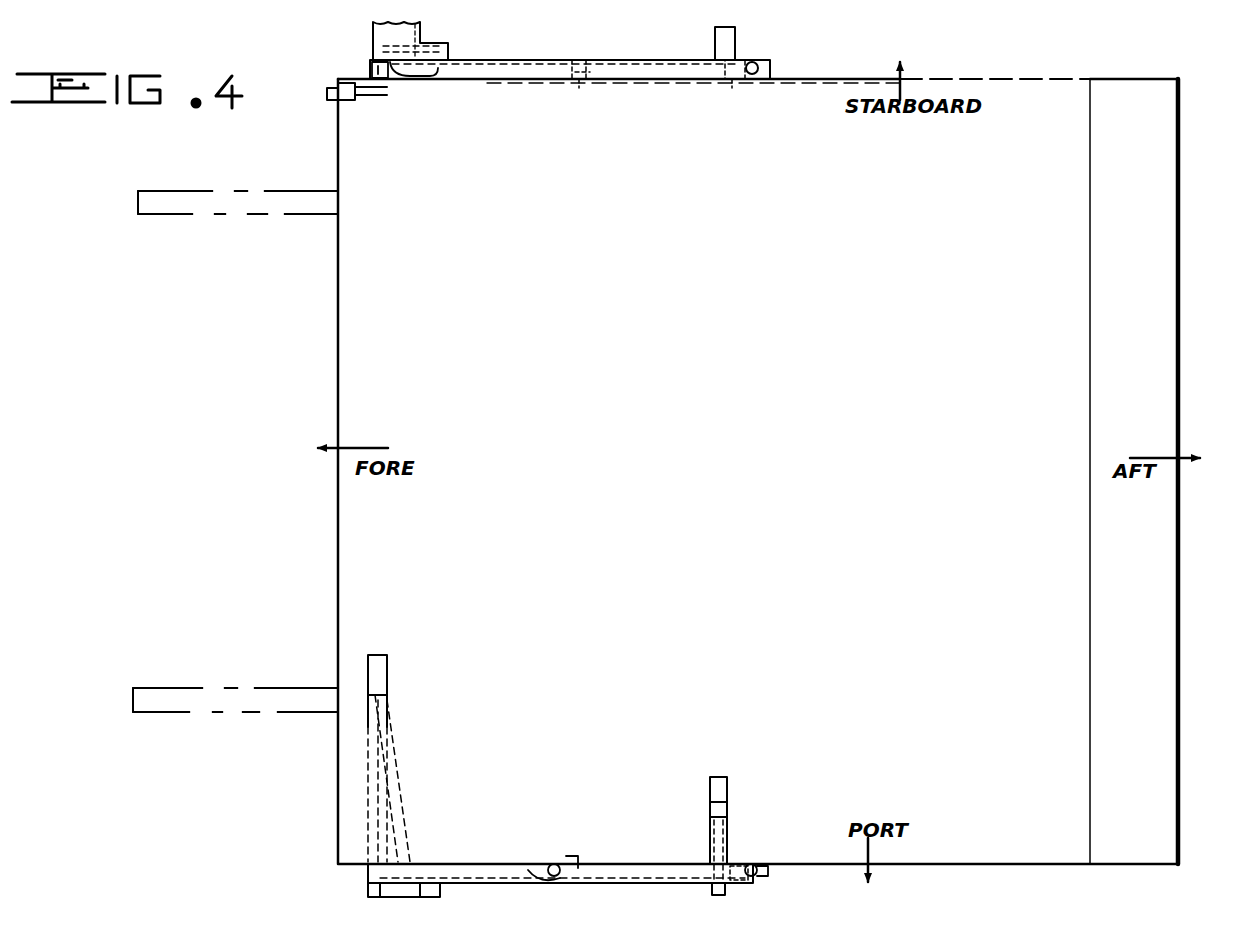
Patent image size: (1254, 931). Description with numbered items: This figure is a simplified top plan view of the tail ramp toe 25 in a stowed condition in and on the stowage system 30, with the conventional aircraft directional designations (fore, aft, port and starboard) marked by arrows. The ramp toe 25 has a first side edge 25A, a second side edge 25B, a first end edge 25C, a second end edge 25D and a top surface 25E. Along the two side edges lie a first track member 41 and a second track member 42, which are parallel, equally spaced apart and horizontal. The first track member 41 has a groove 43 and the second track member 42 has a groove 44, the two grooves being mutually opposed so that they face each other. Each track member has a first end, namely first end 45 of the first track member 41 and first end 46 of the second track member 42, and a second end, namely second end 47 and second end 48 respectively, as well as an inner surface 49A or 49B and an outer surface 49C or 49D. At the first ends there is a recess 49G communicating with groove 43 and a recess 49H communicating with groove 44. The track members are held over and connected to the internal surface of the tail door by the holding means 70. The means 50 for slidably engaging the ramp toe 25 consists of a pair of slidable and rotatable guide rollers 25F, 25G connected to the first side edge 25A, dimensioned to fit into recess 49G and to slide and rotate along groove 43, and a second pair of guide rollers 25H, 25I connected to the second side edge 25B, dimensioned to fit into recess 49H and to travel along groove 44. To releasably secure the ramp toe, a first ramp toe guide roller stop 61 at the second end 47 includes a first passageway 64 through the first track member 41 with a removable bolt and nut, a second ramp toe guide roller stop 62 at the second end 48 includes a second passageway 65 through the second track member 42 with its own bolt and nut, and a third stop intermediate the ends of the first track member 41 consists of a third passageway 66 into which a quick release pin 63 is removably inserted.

The ramp toe 25 is at (744, 592).
The first side edge 25A is at (898, 864).
The second side edge 25B is at (915, 78).
The first end edge 25C is at (1178, 755).
The second end edge 25D is at (338, 330).
The top surface 25E is at (1002, 92).
The guide roller 25F is at (745, 885).
The guide roller 25G is at (578, 868).
The guide roller 25H is at (732, 65).
The guide roller 25I is at (567, 62).
The stowage system 30 is at (565, 55).
The first track member 41 is at (478, 862).
The second track member 42 is at (513, 68).
The groove 43 is at (545, 870).
The groove 44 is at (670, 70).
The first end 45 is at (368, 880).
The first end 46 is at (385, 78).
The second end 47 is at (752, 873).
The second end 48 is at (762, 68).
The inner surface 49A is at (425, 862).
The inner surface 49B is at (490, 70).
The outer surface 49C is at (640, 880).
The outer surface 49D is at (590, 62).
The recess 49G is at (395, 862).
The recess 49H is at (396, 64).
The means for slidably engaging the ramp toe 50 is at (705, 88).
The first ramp toe guide roller stop 61 is at (768, 865).
The second ramp toe guide roller stop 62 is at (760, 60).
The quick release pin 63 is at (540, 875).
The first passageway 64 is at (740, 865).
The second passageway 65 is at (770, 78).
The third passageway 66 is at (560, 866).
The means for holding the track members 70 is at (398, 41).